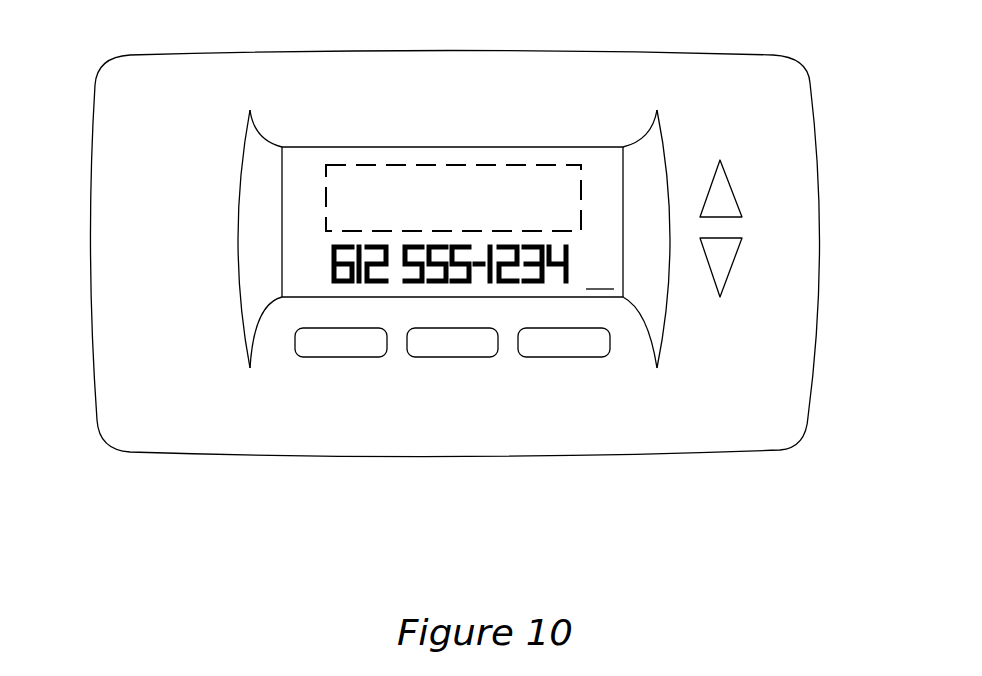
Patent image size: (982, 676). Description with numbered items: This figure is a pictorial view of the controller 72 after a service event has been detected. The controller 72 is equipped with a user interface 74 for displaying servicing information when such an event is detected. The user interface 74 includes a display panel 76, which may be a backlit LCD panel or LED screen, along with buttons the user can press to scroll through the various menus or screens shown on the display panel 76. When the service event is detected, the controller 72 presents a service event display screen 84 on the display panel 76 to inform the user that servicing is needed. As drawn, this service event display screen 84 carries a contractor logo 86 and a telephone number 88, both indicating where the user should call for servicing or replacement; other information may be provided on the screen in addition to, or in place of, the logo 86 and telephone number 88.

The controller 72 is at (807, 50).
The user interface 74 is at (738, 163).
The display panel 76 is at (600, 276).
The service event display screen 84 is at (322, 262).
The logo 86 is at (453, 173).
The telephone number 88 is at (408, 287).